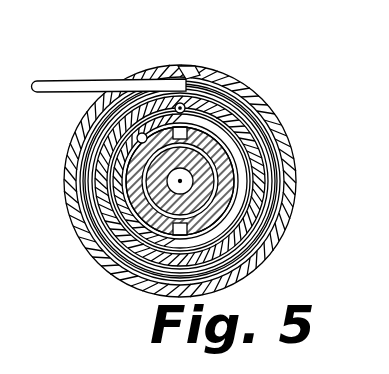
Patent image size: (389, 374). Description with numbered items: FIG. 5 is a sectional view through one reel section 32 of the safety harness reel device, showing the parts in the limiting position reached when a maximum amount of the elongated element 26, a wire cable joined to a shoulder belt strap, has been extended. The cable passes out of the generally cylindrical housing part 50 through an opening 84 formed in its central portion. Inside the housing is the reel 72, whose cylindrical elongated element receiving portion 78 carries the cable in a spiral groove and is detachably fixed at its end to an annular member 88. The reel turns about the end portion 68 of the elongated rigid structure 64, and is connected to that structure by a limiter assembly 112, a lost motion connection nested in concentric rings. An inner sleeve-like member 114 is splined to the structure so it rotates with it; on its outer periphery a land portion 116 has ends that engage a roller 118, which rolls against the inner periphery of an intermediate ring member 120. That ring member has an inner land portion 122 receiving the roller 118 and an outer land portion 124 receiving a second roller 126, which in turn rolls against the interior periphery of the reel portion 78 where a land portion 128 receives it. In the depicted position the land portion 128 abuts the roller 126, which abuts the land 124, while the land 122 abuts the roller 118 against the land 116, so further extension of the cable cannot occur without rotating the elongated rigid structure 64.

The elongated element 26 is at (93, 80).
The reel section 32 is at (222, 64).
The cylindrical housing part 50 is at (286, 234).
The elongated rigid structure 64 is at (220, 163).
The end portion 68 is at (90, 244).
The reel 72 is at (236, 268).
The elongated element receiving portion 78 is at (100, 270).
The opening 84 is at (100, 100).
The annular member 88 is at (93, 207).
The limiter assembly 112 is at (266, 140).
The inner sleeve-like member 114 is at (268, 240).
The land portion 116 is at (225, 185).
The roller 118 is at (138, 152).
The intermediate ring member 120 is at (150, 290).
The land portion 122 is at (185, 67).
The land portion 124 is at (137, 138).
The second roller 126 is at (228, 83).
The land portion 128 is at (258, 118).